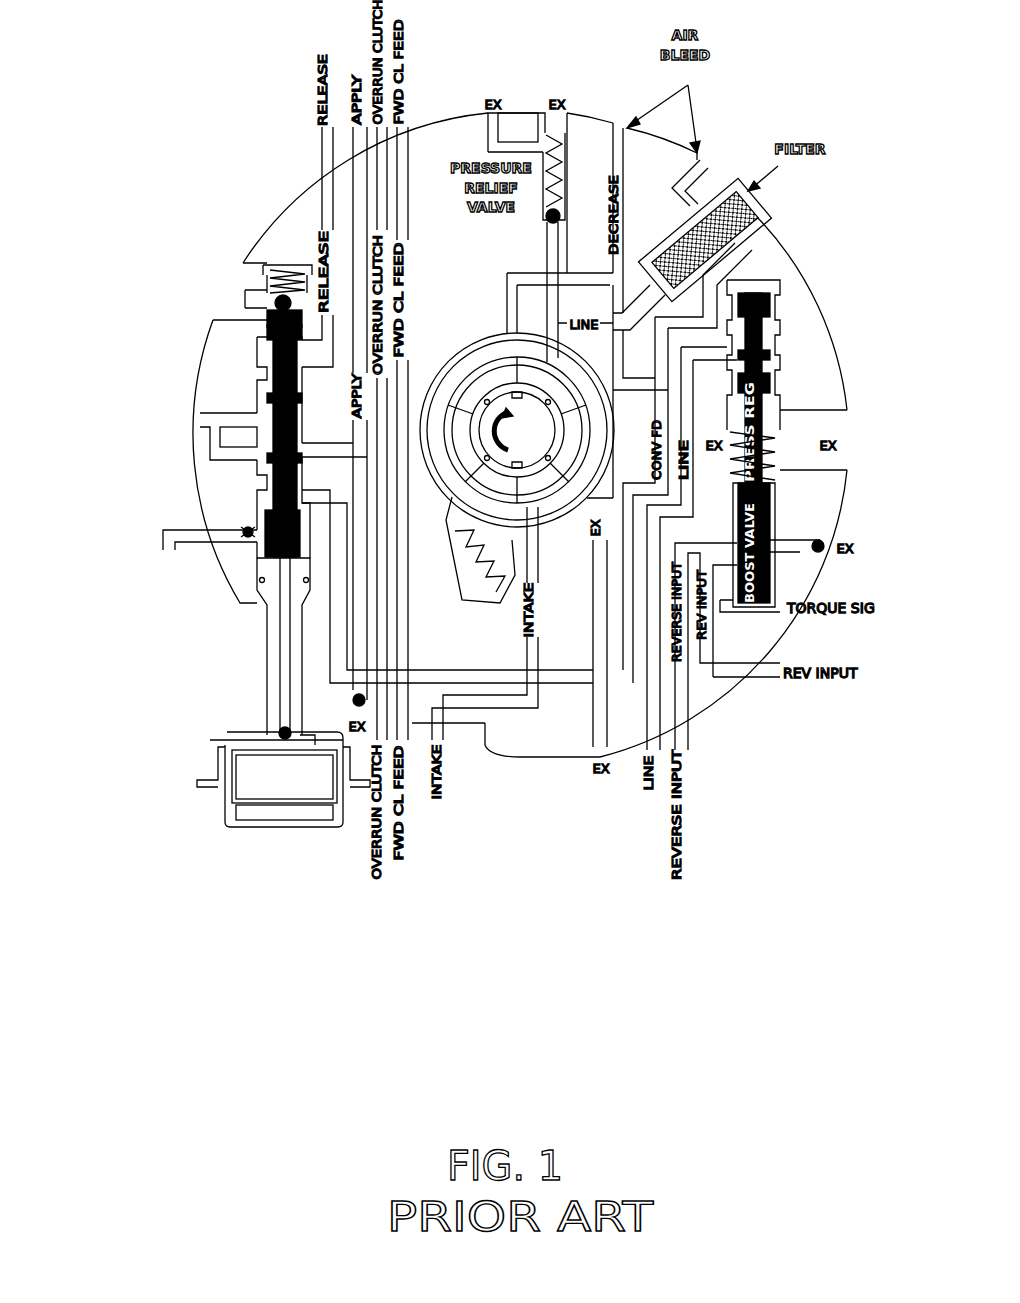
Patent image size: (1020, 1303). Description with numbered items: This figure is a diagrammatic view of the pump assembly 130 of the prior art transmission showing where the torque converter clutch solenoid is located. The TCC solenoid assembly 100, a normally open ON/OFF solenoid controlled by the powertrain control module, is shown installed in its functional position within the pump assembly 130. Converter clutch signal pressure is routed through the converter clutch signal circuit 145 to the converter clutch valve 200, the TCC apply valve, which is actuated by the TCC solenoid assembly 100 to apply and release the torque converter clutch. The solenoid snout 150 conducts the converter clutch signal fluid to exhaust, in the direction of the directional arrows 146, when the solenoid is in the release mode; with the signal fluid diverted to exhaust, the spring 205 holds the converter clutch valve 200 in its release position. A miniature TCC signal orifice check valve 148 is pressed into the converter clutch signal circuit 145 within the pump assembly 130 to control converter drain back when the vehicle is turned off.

The TCC solenoid assembly 100 is at (210, 840).
The pump assembly 130 is at (517, 504).
The converter clutch signal circuit 145 is at (182, 585).
The directional arrows 146 is at (310, 597).
The TCC signal orifice check valve 148 is at (236, 526).
The solenoid snout 150 is at (265, 697).
The converter clutch valve 200 is at (228, 385).
The spring 205 is at (267, 282).